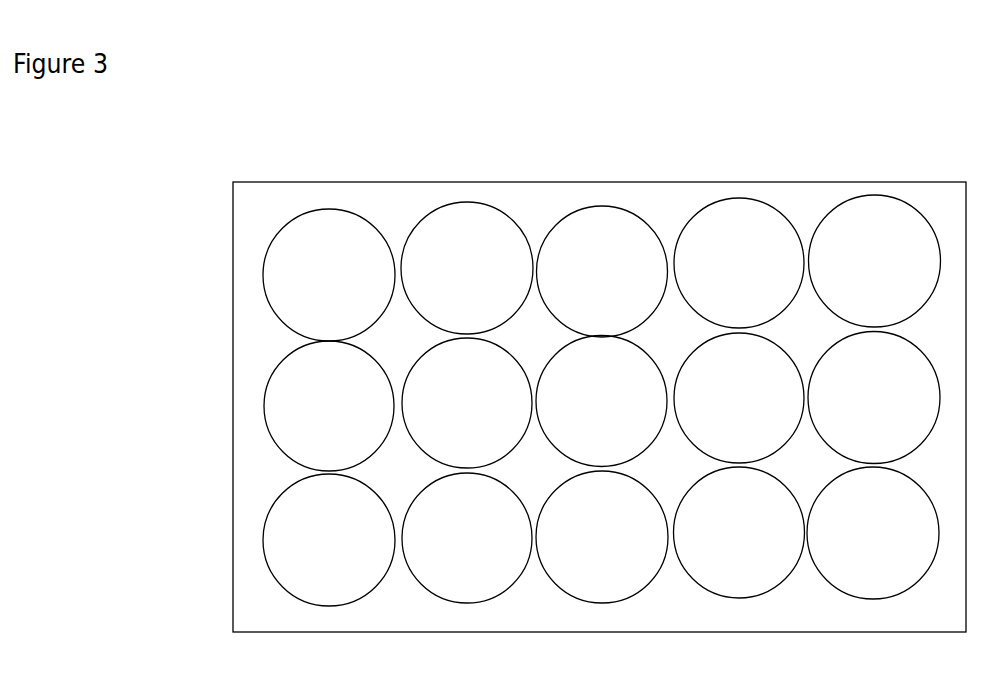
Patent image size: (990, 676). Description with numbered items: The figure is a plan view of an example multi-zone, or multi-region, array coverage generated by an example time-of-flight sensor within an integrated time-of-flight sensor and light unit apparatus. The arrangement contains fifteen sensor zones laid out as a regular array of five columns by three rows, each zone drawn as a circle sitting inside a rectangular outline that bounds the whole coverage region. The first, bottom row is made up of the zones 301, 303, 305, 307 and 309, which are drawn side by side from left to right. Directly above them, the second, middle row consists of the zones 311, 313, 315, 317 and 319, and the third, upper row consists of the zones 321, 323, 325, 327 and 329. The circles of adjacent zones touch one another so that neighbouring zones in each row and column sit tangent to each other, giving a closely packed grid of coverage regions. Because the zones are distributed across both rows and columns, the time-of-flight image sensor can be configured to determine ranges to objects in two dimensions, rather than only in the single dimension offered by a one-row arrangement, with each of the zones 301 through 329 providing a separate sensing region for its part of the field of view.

The zone 301 is at (329, 540).
The zone 303 is at (467, 538).
The zone 305 is at (602, 537).
The zone 307 is at (739, 532).
The zone 309 is at (873, 533).
The zone 311 is at (329, 406).
The zone 313 is at (467, 403).
The zone 315 is at (601, 401).
The zone 317 is at (739, 398).
The zone 319 is at (874, 398).
The zone 321 is at (329, 275).
The zone 323 is at (467, 268).
The zone 325 is at (602, 271).
The zone 327 is at (739, 263).
The zone 329 is at (875, 261).